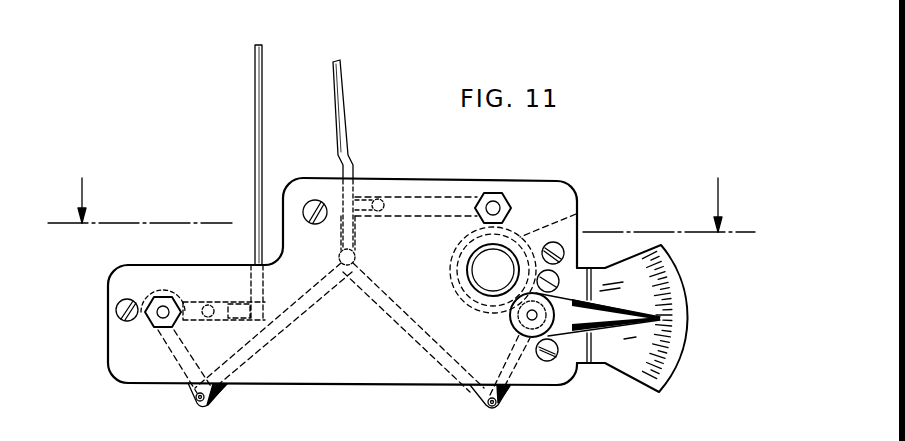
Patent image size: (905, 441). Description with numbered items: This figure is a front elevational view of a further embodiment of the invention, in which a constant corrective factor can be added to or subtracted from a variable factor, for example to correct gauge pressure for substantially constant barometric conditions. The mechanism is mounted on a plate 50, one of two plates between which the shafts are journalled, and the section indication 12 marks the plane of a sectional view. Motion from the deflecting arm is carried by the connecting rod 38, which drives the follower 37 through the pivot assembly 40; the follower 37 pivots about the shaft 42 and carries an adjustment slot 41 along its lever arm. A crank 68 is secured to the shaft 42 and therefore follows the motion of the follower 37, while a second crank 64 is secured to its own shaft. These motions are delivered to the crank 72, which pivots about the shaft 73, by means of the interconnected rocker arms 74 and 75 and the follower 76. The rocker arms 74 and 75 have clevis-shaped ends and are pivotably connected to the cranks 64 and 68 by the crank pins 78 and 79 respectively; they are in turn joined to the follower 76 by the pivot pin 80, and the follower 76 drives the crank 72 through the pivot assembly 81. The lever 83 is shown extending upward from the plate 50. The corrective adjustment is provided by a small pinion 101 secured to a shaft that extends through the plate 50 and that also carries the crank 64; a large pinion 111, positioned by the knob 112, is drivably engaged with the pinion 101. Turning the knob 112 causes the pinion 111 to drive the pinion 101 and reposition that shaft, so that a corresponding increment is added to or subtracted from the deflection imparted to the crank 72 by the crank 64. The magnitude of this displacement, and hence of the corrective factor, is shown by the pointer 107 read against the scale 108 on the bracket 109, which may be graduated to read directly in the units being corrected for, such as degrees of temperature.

The section line 12- 12 is at (401, 205).
The follower 37 is at (205, 300).
The connecting rod 38 is at (258, 93).
The pivot assembly 40 is at (246, 300).
The adjustment slot 41 is at (199, 302).
The shaft 42 is at (160, 312).
The plate 50 is at (551, 197).
The crank 64 is at (510, 388).
The crank 68 is at (193, 388).
The crank 72 is at (416, 180).
The shaft 73 is at (500, 200).
The rocker arm 74 is at (222, 386).
The rocker arm 75 is at (478, 395).
The follower 76 is at (357, 236).
The crank pin 78 is at (206, 402).
The crank pin 79 is at (497, 406).
The pivot pin 80 is at (347, 268).
The pivot assembly 81 is at (372, 178).
The lever 83 is at (348, 98).
The small pinion 101 is at (498, 326).
The pointer 107 is at (606, 338).
The scale 108 is at (679, 327).
The bracket 109 is at (636, 365).
The large pinion 111 is at (578, 215).
The knob 112 is at (484, 272).